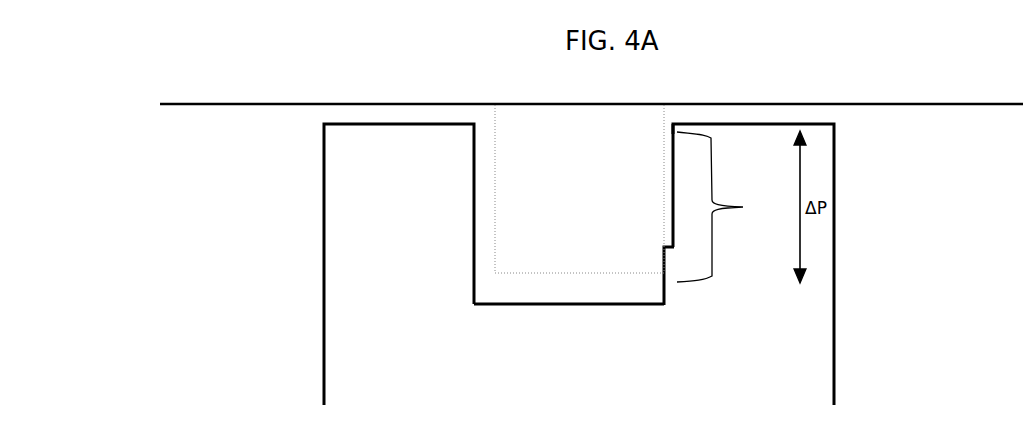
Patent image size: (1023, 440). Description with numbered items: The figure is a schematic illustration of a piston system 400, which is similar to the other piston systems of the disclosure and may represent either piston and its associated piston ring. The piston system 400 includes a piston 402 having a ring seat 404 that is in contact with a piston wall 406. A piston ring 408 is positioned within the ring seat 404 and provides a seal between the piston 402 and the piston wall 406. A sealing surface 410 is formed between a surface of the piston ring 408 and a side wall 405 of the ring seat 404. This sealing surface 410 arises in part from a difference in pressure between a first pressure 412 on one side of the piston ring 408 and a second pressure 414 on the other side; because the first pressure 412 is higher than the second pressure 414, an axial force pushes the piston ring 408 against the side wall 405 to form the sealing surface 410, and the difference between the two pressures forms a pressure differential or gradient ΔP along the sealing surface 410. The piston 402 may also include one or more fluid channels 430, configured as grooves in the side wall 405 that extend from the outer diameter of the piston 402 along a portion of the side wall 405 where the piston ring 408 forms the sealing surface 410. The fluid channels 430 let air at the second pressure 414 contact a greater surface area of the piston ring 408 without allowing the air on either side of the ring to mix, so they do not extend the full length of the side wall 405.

The piston system 400 is at (526, 277).
The piston 402 is at (833, 384).
The ring seat 404 is at (560, 291).
The side wall 405 is at (660, 290).
The piston wall 406 is at (906, 103).
The piston ring 408 is at (580, 131).
The sealing surface 410 is at (730, 207).
The first pressure 412 is at (266, 145).
The second pressure 414 is at (889, 145).
The fluid channels 430 is at (665, 124).